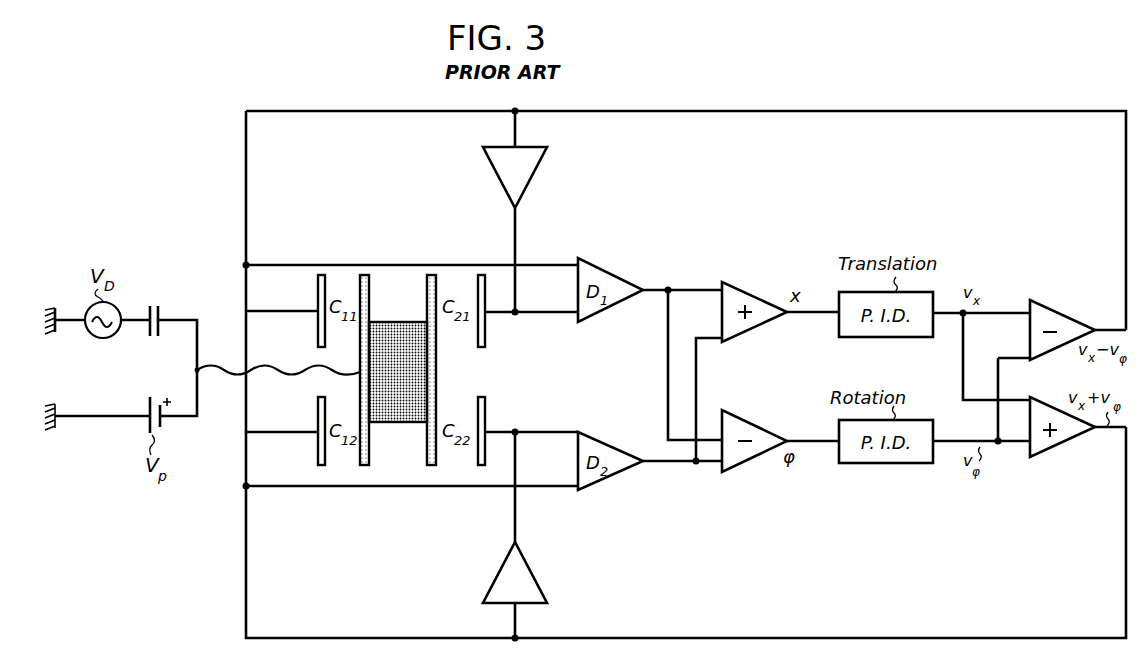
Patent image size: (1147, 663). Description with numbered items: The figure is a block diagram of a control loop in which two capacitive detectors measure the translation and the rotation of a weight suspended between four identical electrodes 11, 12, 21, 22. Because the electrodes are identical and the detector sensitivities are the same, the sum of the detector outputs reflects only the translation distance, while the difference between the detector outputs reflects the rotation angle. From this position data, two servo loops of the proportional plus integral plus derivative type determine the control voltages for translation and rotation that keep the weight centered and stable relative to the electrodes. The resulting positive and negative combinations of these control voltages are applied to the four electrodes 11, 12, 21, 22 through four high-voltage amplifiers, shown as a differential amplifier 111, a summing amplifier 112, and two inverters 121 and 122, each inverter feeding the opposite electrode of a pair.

The electrode 11 is at (318, 291).
The electrode 12 is at (318, 450).
The electrode 21 is at (486, 328).
The electrode 22 is at (486, 415).
The differential amplifier 111 is at (1058, 310).
The summing amplifier 112 is at (1053, 458).
The inverter 121 is at (543, 163).
The inverter 122 is at (540, 572).